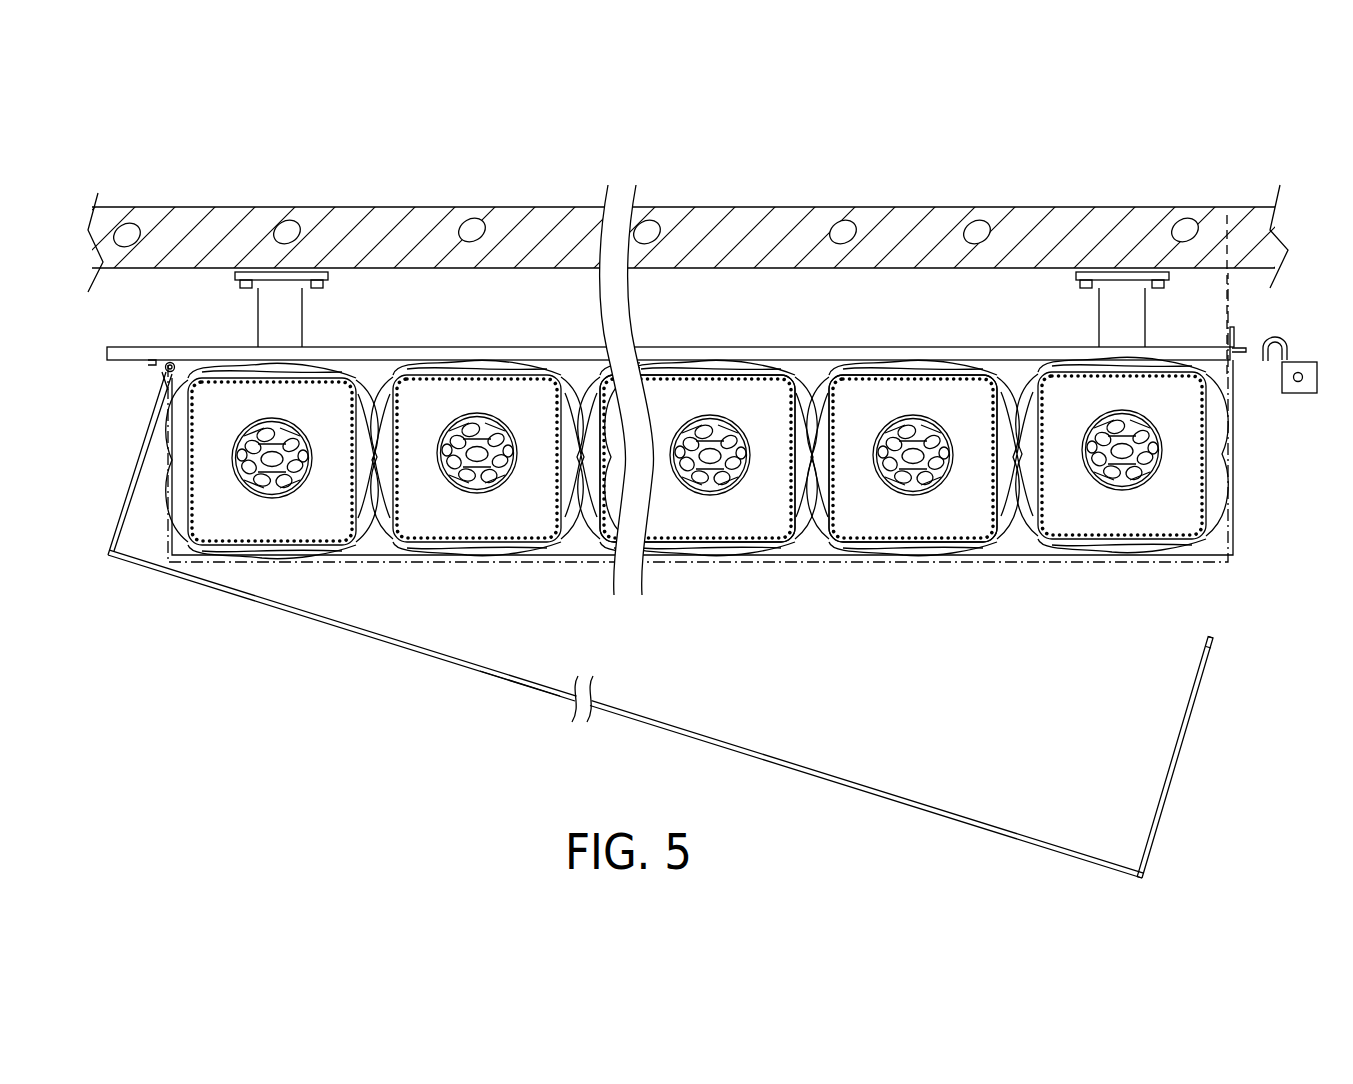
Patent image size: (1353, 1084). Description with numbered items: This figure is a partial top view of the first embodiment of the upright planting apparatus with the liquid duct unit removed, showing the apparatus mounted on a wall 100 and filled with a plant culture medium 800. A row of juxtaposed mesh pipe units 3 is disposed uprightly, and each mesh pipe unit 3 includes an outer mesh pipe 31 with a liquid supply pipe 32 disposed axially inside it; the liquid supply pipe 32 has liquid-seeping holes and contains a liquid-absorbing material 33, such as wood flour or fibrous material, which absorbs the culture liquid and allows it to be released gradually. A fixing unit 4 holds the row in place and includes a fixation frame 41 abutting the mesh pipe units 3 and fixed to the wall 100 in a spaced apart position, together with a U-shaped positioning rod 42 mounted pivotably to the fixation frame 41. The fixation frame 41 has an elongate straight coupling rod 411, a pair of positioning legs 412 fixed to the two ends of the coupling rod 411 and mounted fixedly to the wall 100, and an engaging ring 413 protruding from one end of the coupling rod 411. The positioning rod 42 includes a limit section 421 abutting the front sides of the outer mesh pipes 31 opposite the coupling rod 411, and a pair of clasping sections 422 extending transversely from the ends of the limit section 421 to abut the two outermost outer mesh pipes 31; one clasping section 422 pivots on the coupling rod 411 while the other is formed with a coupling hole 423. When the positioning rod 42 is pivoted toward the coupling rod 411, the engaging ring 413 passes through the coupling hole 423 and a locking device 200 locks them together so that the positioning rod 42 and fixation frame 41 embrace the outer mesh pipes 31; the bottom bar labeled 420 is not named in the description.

The wall 100 is at (800, 220).
The locking device 200 is at (1305, 384).
The mesh pipe unit 3 is at (727, 397).
The outer mesh pipe 31 is at (1002, 528).
The liquid supply pipe 32 is at (918, 480).
The liquid-absorbing material 33 is at (708, 430).
The plant culture medium 800 is at (860, 513).
The fixing unit 4 is at (695, 510).
The fixation frame 41 is at (727, 252).
The coupling rod 411 is at (423, 347).
The positioning leg 412 is at (283, 293).
The engaging ring 413 is at (1242, 347).
The positioning rod 42 is at (695, 510).
The bottom bar 420 is at (865, 783).
The limit section 421 is at (507, 672).
The clasping section 422 is at (120, 525).
The coupling hole 423 is at (1238, 212).